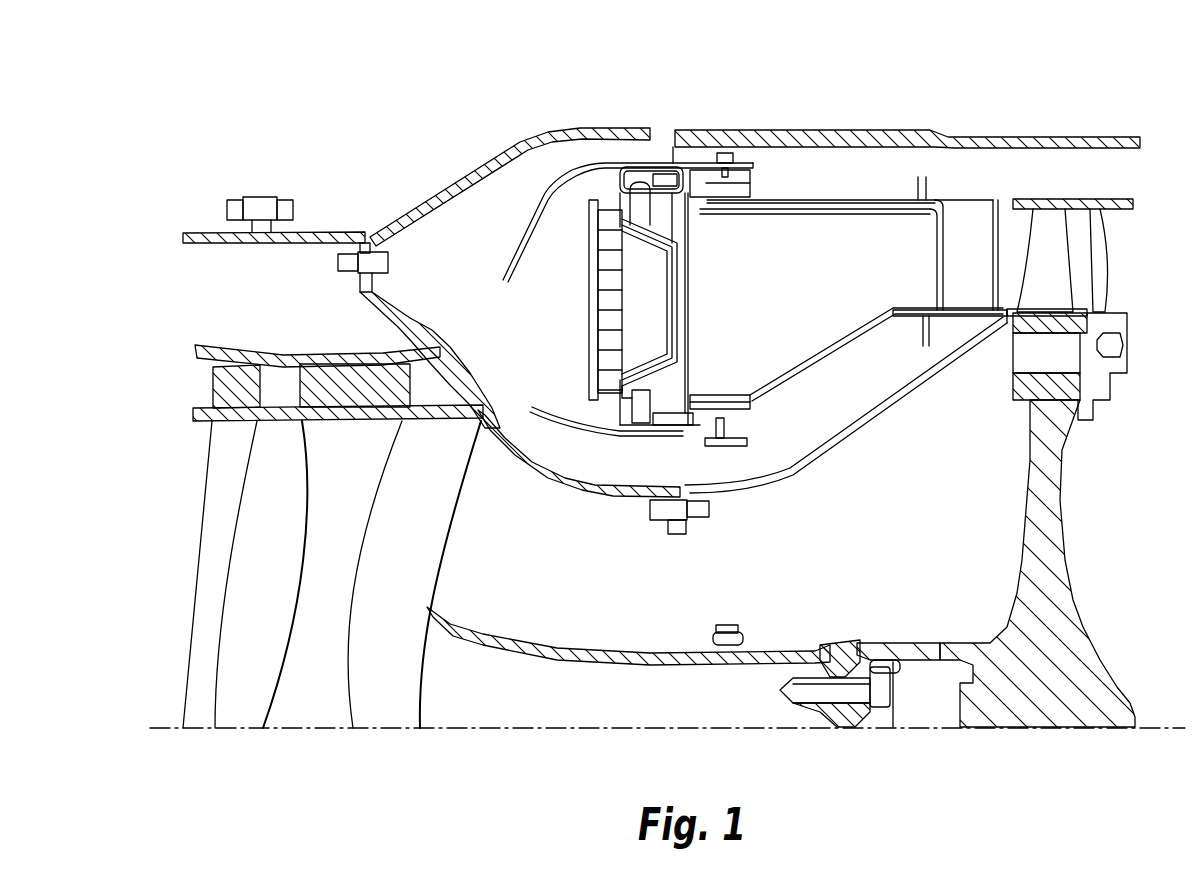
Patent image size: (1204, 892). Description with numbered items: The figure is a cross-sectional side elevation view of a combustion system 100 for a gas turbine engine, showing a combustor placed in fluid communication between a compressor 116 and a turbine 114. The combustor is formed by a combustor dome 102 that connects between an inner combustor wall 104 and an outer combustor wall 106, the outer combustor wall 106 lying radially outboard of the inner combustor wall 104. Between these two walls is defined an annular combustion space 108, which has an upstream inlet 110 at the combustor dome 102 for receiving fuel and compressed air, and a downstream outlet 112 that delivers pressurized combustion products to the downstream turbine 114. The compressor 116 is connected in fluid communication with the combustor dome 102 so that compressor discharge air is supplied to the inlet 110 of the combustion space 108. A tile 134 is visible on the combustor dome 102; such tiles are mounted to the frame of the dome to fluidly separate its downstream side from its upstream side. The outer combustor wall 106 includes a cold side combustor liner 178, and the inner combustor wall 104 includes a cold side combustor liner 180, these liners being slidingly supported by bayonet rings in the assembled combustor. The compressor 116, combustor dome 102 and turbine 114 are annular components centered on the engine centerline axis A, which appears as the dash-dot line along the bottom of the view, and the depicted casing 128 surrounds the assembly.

The combustion system 100 is at (667, 392).
The combustor dome 102 is at (539, 173).
The inner combustor wall 104 is at (840, 345).
The outer combustor wall 106 is at (797, 205).
The annular combustion space 108 is at (811, 302).
The upstream inlet 110 is at (702, 322).
The downstream outlet 112 is at (891, 270).
The turbine 114 is at (1133, 251).
The compressor 116 is at (187, 380).
The engine casing 128 is at (587, 133).
The tile 134 is at (681, 219).
The cold side combustor liner 178 is at (860, 205).
The cold side combustor liner 180 is at (907, 310).
The engine centerline axis A is at (1163, 727).